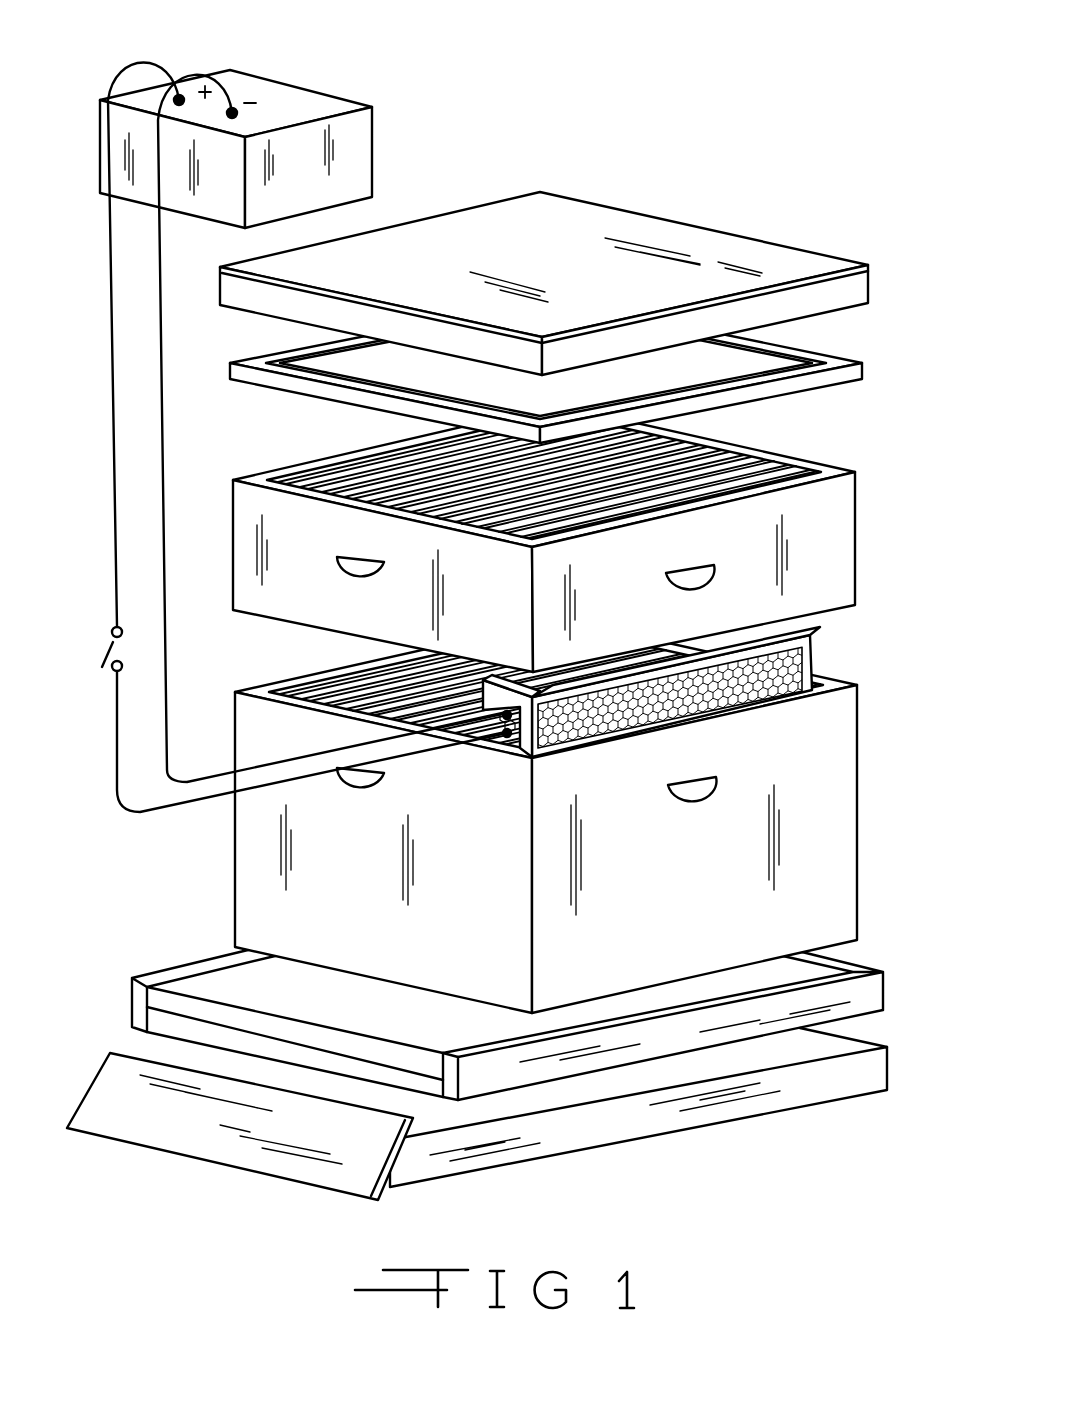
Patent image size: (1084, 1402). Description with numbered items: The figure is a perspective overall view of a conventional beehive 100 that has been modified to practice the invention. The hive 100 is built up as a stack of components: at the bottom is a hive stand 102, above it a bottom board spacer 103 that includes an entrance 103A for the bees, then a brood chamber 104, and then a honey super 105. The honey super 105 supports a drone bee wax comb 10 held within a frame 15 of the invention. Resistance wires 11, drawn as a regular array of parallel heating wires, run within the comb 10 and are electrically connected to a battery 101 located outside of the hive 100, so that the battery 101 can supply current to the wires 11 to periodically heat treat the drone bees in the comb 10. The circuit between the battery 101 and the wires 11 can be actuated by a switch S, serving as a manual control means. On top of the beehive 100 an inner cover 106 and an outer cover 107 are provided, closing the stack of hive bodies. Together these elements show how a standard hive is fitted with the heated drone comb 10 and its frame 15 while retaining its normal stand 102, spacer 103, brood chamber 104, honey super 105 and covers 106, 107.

The beehive 100 is at (655, 115).
The battery 101 is at (312, 100).
The hive stand 102 is at (833, 1073).
The bottom board spacer 103 is at (872, 987).
The entrance 103A is at (403, 1023).
The brood chamber 104 is at (837, 767).
The honey super 105 is at (840, 508).
The inner cover 106 is at (833, 360).
The outer cover 107 is at (702, 255).
The drone bee comb 10 is at (696, 683).
The resistance wires 11 is at (509, 715).
The frame 15 is at (812, 651).
The switch S is at (103, 652).